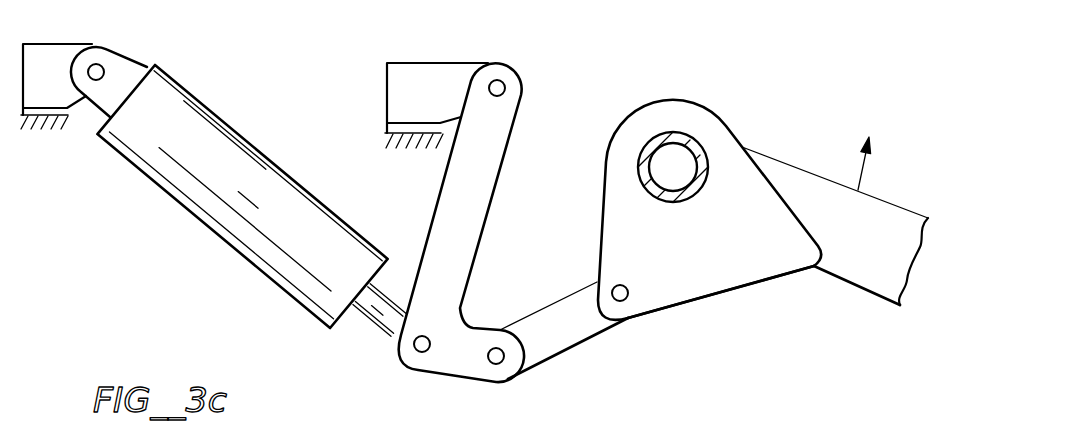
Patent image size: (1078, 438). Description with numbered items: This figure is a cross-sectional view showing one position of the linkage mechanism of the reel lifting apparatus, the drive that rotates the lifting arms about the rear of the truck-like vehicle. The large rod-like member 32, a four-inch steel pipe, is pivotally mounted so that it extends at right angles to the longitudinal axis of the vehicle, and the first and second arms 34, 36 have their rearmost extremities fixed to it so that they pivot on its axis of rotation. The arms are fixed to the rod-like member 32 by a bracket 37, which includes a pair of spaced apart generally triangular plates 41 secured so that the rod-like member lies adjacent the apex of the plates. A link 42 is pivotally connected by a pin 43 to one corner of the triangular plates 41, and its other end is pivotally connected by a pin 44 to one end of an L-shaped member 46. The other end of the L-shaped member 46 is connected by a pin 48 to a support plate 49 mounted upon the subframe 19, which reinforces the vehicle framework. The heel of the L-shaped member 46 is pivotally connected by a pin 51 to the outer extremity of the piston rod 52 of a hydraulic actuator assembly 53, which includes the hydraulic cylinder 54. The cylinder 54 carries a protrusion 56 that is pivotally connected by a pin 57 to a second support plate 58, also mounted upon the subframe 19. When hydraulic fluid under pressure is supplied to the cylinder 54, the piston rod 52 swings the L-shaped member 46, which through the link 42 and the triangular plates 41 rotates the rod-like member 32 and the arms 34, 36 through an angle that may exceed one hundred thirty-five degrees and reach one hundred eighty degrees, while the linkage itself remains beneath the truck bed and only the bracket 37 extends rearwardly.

The subframe 19 is at (72, 114).
The rod-like member 32 is at (666, 133).
The first arm 34 is at (835, 211).
The second arm 36 is at (790, 180).
The bracket 37 is at (750, 296).
The triangular plate 41 is at (692, 302).
The link 42 is at (541, 352).
The pin 43 is at (622, 302).
The pin 44 is at (494, 365).
The L-shaped member 46 is at (470, 220).
The pin 48 is at (500, 79).
The support plate 49 is at (418, 82).
The pin 51 is at (420, 353).
The piston rod 52 is at (366, 322).
The hydraulic actuator assembly 53 is at (242, 196).
The hydraulic cylinder 54 is at (257, 170).
The protrusion 56 is at (120, 78).
The pin 57 is at (100, 63).
The support plate 58 is at (50, 66).